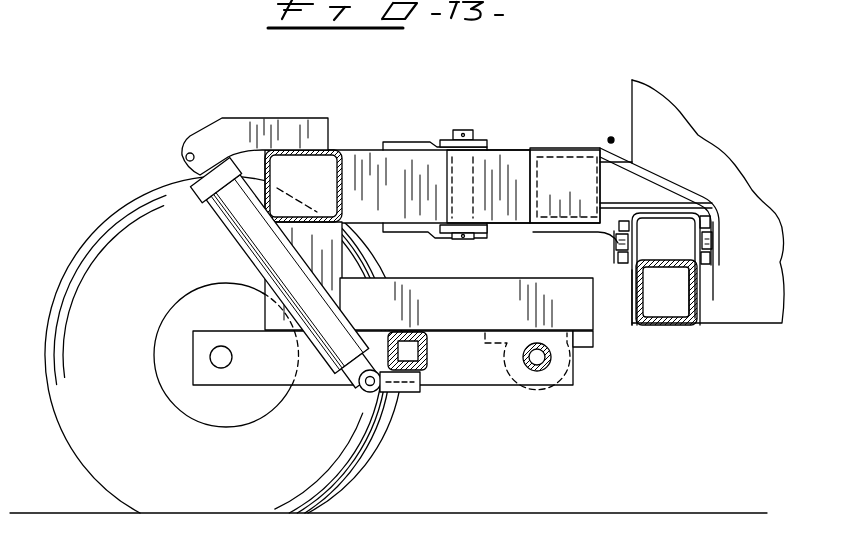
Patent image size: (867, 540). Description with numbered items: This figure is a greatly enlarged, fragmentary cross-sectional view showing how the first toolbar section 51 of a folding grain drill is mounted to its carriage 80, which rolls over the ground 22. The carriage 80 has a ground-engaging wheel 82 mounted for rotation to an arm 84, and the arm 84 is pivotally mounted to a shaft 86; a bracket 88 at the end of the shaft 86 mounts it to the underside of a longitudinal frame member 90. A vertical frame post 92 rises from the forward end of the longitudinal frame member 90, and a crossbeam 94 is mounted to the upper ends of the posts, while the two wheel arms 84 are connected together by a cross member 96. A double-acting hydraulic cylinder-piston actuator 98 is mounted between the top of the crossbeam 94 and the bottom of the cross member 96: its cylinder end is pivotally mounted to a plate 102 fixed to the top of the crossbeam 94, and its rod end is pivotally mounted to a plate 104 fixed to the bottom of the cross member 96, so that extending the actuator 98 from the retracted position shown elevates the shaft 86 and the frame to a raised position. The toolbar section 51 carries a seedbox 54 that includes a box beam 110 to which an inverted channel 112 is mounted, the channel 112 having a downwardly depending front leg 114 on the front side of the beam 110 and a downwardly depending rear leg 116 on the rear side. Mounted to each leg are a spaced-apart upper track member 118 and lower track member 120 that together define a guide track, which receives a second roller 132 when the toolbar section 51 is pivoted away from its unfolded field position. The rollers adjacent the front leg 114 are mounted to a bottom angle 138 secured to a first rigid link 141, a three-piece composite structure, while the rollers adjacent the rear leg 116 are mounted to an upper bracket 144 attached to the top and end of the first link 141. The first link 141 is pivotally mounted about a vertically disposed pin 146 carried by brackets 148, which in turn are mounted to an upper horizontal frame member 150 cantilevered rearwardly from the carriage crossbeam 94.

The ground 22 is at (507, 510).
The first toolbar section 51 is at (631, 97).
The seedbox 54 is at (693, 132).
The carriage 80 is at (591, 332).
The ground-engaging wheels 82 is at (95, 257).
The arm 84 is at (503, 365).
The shaft 86 is at (540, 372).
The bracket 88 is at (573, 370).
The longitudinal frame members 90 is at (489, 311).
The vertical frame post 92 is at (279, 305).
The crossbeam 94 is at (292, 157).
The crossbeam (cross member) 96 is at (430, 357).
The hydraulic cylinder-piston actuators 98 is at (240, 233).
The plate 102 is at (303, 114).
The plate 104 is at (398, 393).
The box beam 110 is at (680, 324).
The inverted channel 112 is at (683, 221).
The front leg 114 is at (623, 305).
The rear leg 116 is at (699, 301).
The upper track member 118 is at (618, 227).
The lower track member 120 is at (619, 264).
The second roller 132 is at (782, 223).
The bottom angle 138 is at (565, 229).
The first rigid link 141 is at (500, 153).
The upper bracket 144 is at (658, 193).
The pin 146 is at (472, 132).
The brackets 148 is at (387, 143).
The upper horizontal frame member 150 is at (350, 160).